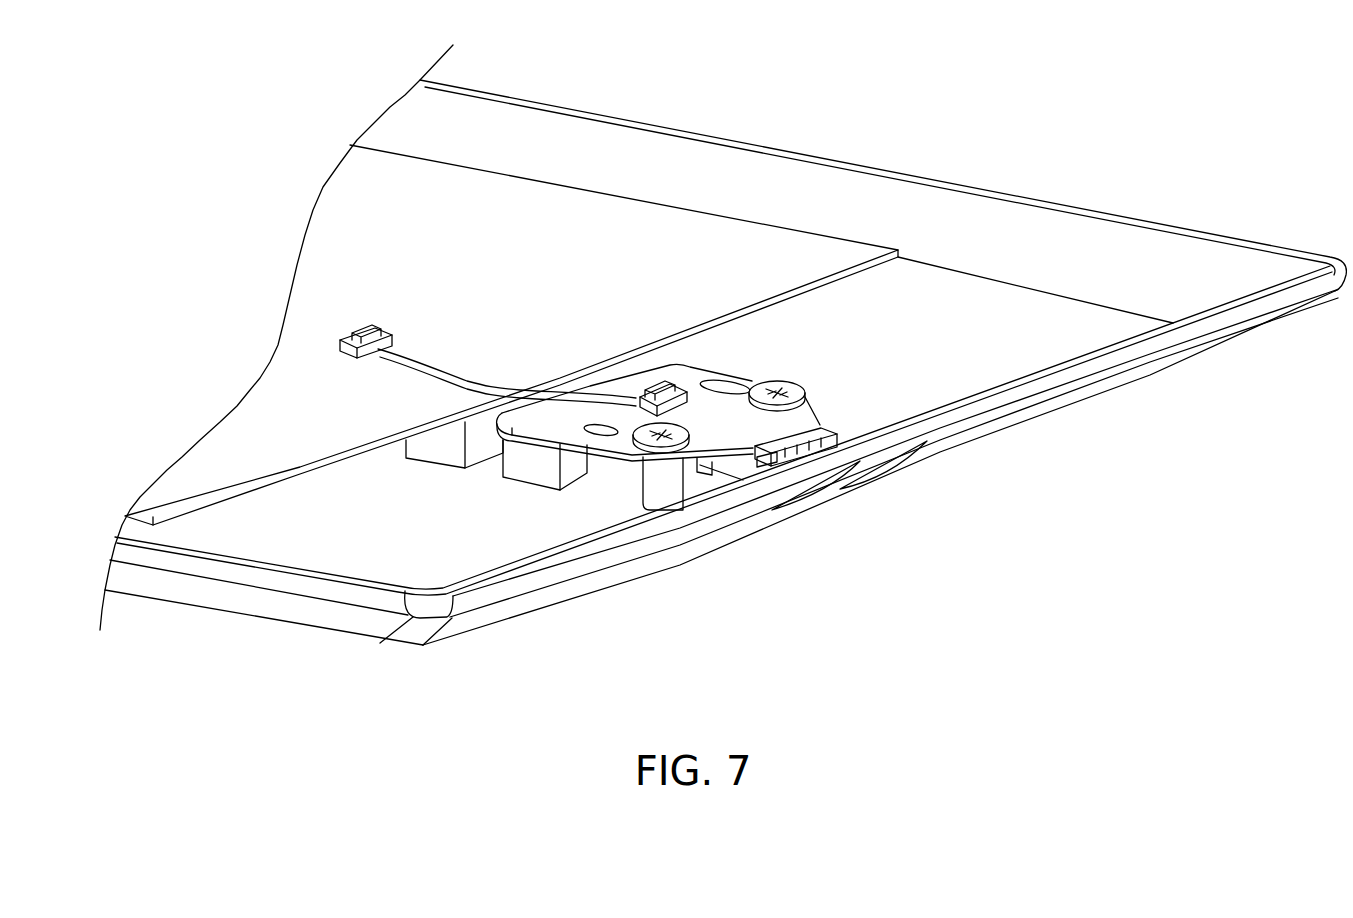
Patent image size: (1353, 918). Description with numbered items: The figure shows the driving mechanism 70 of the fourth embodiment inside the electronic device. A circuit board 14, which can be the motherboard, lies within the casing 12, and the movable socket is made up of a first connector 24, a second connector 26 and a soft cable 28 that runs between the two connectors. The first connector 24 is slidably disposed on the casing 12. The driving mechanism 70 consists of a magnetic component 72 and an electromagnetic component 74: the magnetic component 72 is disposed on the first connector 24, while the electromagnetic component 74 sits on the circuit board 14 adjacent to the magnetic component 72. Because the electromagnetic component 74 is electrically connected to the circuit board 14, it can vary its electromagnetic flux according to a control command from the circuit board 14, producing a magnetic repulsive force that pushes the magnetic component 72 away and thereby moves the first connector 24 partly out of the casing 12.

The casing 12 is at (1162, 283).
The circuit board 14 is at (433, 221).
The first connector 24 is at (697, 380).
The second connector 26 is at (365, 323).
The soft cable 28 is at (490, 386).
The driving mechanism 70 is at (496, 590).
The magnetic component 72 is at (540, 460).
The electromagnetic component 74 is at (442, 447).